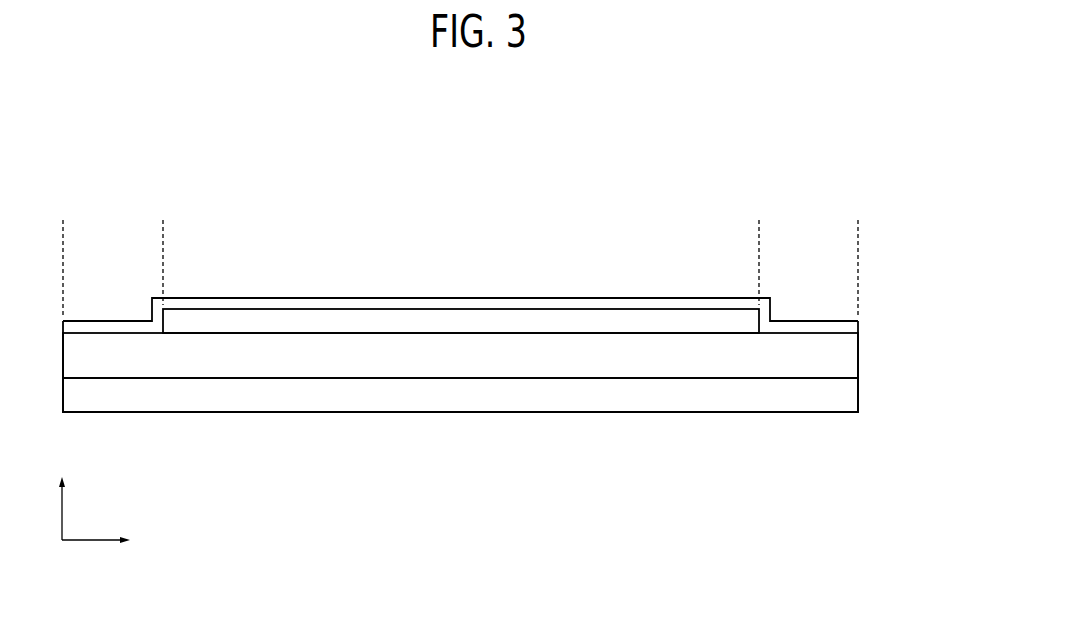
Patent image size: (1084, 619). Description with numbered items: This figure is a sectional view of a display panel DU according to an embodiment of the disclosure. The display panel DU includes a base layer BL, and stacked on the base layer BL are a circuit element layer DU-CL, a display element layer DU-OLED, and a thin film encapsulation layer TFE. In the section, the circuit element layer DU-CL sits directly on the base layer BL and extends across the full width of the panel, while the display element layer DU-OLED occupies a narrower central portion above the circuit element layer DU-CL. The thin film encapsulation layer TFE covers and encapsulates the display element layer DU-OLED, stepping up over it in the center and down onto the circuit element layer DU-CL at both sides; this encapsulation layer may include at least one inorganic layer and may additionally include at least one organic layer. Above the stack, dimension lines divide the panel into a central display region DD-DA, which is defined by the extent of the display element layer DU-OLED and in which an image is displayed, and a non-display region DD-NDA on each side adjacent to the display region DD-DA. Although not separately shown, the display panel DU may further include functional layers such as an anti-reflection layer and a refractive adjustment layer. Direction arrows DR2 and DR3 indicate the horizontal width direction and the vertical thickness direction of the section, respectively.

The display panel DU is at (871, 136).
The base layer BL is at (263, 397).
The circuit element layer DU-CL is at (352, 363).
The display element layer DU-OLED is at (460, 322).
The thin film encapsulation layer TFE is at (563, 304).
The non-display region DD-NDA is at (163, 241).
The display region DD-DA is at (759, 241).
The third direction DR3 is at (62, 492).
The second direction DR2 is at (117, 544).